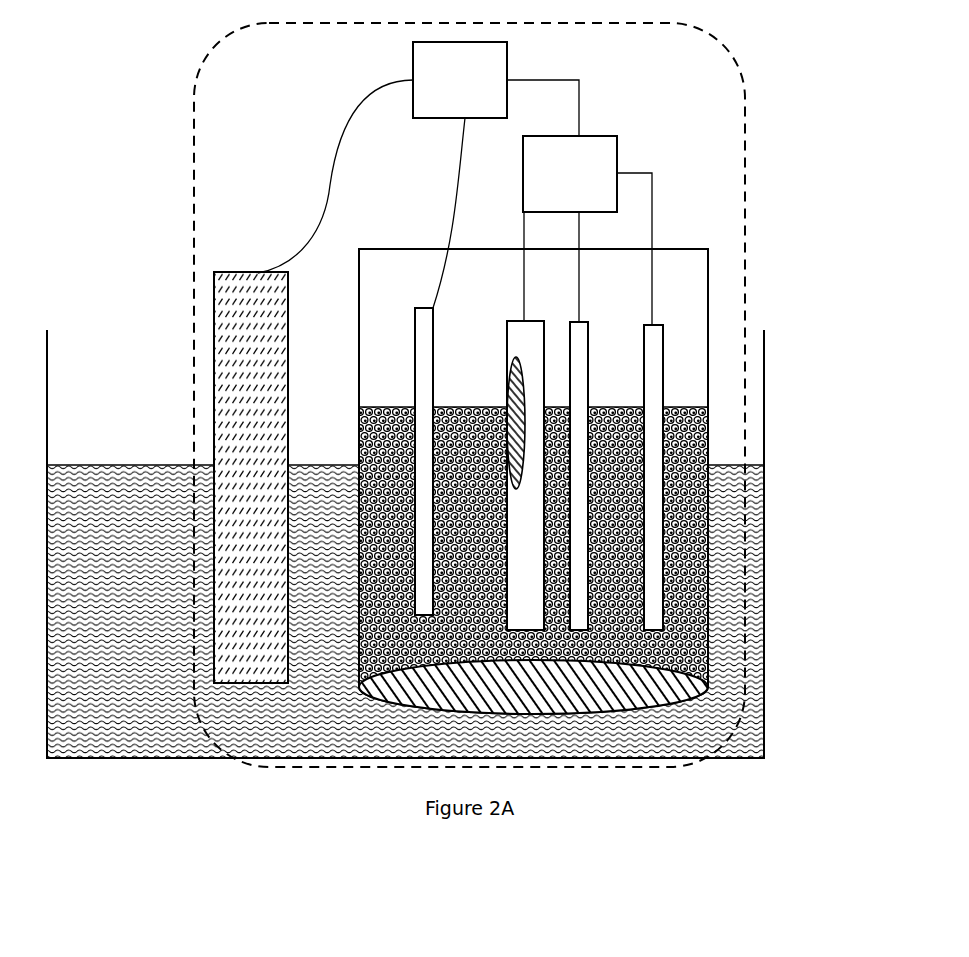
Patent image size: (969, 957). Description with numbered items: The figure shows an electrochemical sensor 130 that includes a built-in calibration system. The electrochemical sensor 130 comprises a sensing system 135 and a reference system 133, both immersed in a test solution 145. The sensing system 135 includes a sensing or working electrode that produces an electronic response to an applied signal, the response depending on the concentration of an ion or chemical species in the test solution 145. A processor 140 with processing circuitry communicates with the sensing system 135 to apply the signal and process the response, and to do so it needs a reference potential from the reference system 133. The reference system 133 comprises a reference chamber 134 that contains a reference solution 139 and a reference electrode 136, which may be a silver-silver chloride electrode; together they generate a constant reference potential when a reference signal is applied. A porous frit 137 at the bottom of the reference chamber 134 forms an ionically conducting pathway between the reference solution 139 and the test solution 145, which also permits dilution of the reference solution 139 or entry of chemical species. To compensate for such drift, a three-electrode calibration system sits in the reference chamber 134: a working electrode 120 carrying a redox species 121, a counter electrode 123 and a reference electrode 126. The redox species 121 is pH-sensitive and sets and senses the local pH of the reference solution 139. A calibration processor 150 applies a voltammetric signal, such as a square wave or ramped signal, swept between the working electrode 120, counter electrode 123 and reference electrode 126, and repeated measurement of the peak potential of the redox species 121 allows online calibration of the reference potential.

The electrochemical sensor 130 is at (193, 173).
The reference system 133 is at (733, 285).
The reference chamber 134 is at (708, 492).
The sensing system 135 is at (213, 360).
The reference electrode 136 is at (415, 363).
The working electrode 120 is at (507, 341).
The redox species 121 is at (512, 400).
The counter electrode 123 is at (589, 320).
The reference electrode 126 is at (663, 380).
The porous frit 137 is at (559, 691).
The reference solution 139 is at (481, 629).
The processor 140 is at (418, 175).
The calibration processor 150 is at (587, 230).
The test solution 145 is at (136, 516).